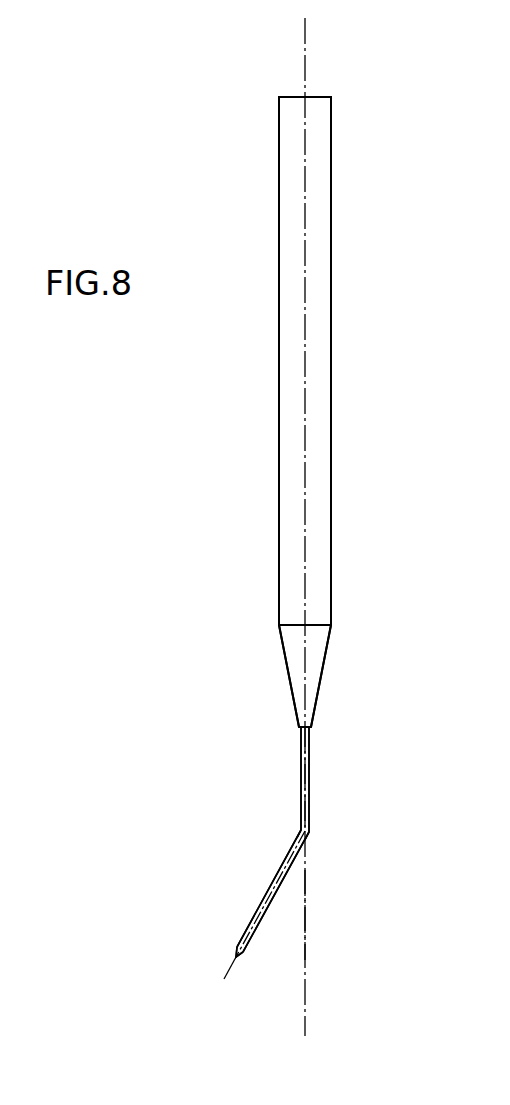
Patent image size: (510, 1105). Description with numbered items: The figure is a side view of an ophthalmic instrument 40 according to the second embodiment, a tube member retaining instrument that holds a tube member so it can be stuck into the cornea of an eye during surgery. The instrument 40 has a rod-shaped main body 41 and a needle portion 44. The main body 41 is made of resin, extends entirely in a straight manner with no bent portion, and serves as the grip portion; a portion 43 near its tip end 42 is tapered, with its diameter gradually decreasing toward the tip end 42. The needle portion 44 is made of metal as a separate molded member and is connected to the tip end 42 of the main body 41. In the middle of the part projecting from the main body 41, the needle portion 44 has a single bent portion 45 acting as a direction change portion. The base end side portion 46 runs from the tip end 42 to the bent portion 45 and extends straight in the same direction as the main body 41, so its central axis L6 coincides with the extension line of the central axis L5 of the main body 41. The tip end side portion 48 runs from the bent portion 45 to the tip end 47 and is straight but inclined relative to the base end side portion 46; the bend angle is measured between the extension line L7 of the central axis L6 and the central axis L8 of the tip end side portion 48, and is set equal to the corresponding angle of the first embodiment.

The instrument 40 is at (172, 112).
The main body 41 is at (318, 350).
The tip end 42 is at (311, 730).
The portion 43 is at (316, 650).
The needle portion 44 is at (256, 834).
The bent portion 45 is at (306, 832).
The base end side portion 46 is at (301, 770).
The tip end 47 is at (238, 958).
The tip end side portion 48 is at (300, 868).
The central axis L5 is at (305, 212).
The central axis L6 is at (305, 783).
The extension line L7 is at (305, 968).
The central axis L8 is at (272, 893).